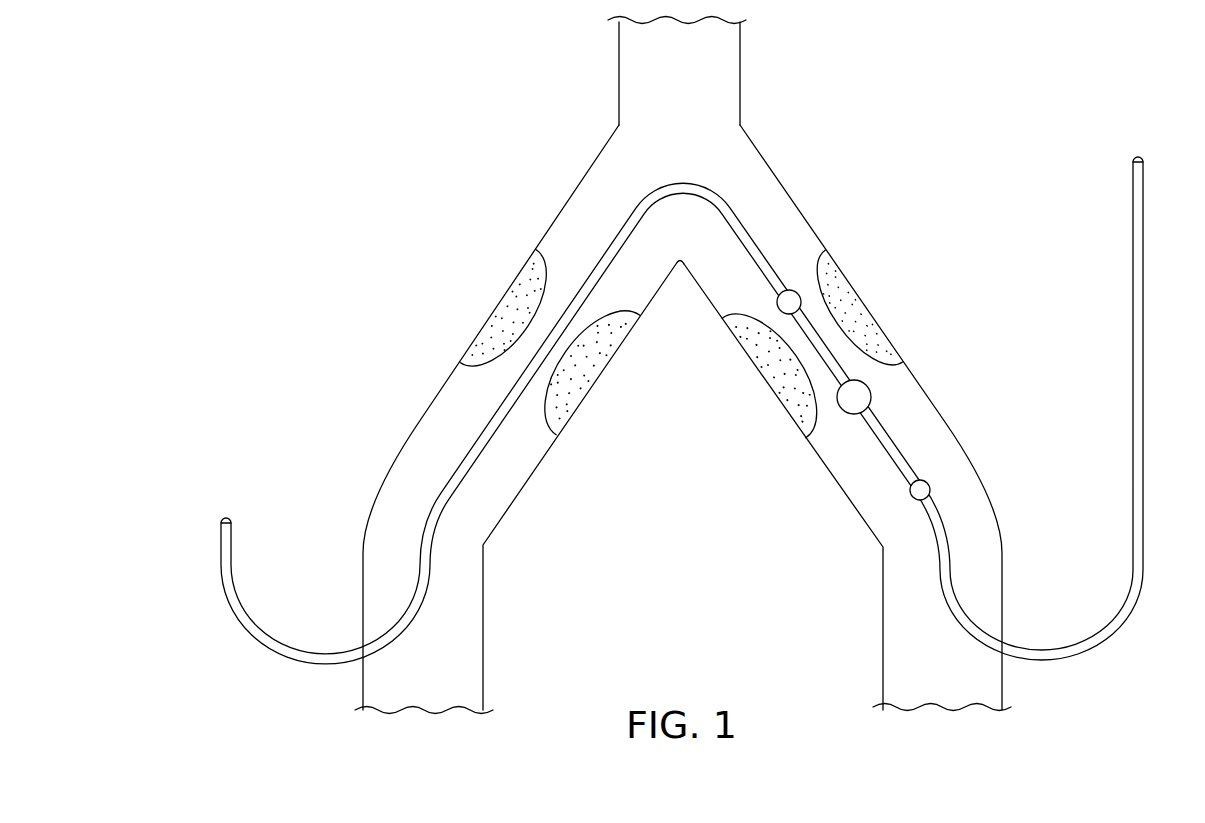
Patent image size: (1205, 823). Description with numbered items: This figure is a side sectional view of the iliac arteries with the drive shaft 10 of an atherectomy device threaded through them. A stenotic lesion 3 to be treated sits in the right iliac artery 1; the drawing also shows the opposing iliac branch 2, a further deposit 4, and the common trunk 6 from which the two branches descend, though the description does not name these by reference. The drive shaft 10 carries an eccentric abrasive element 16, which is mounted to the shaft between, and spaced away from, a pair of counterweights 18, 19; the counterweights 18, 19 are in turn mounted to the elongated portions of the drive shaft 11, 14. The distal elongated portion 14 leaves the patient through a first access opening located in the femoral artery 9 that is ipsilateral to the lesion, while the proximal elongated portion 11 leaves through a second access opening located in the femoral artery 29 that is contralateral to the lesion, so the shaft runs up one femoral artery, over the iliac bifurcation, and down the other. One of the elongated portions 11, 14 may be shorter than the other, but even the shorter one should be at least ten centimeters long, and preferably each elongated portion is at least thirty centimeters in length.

The right iliac artery 1 is at (779, 182).
The left branch vessel wall 2 is at (424, 413).
The stenotic lesion 3 is at (833, 263).
The plaque deposit in left branch 4 is at (533, 258).
The main vessel trunk 6 is at (740, 42).
The ipsilateral femoral artery 9 is at (1003, 683).
The drive shaft 10 is at (236, 535).
The proximal elongated portion of the drive shaft 11 is at (707, 184).
The distal elongated portion of the drive shaft 14 is at (946, 519).
The eccentric abrasive element 16 is at (871, 395).
The counterweight 18 is at (791, 290).
The counterweight 19 is at (928, 486).
The contralateral femoral artery 29 is at (363, 684).